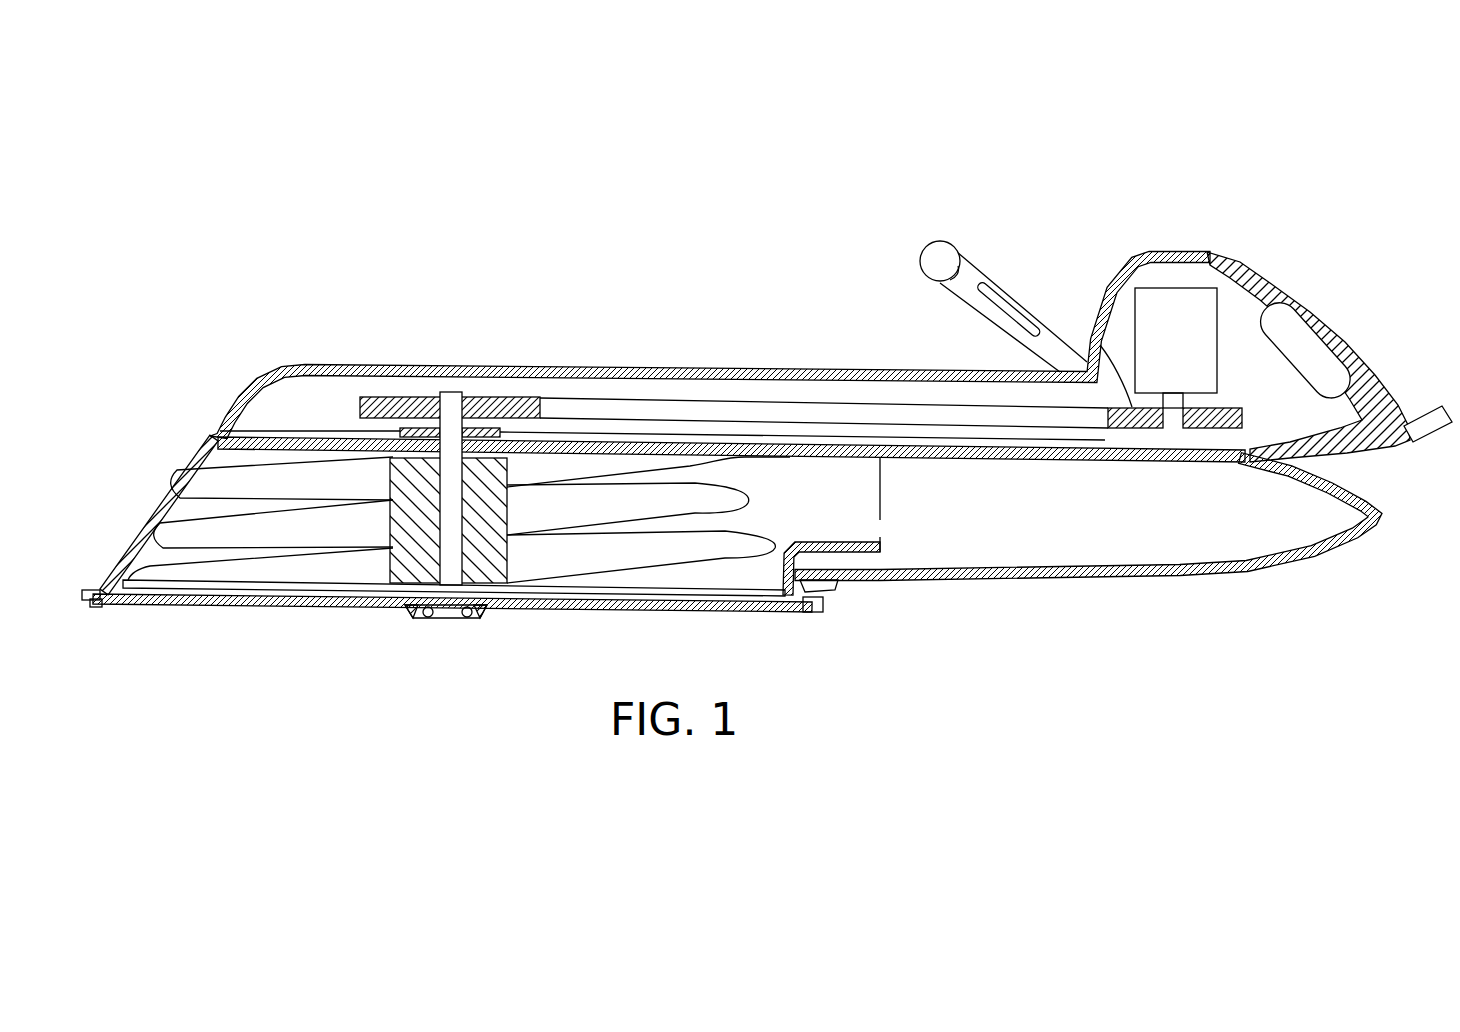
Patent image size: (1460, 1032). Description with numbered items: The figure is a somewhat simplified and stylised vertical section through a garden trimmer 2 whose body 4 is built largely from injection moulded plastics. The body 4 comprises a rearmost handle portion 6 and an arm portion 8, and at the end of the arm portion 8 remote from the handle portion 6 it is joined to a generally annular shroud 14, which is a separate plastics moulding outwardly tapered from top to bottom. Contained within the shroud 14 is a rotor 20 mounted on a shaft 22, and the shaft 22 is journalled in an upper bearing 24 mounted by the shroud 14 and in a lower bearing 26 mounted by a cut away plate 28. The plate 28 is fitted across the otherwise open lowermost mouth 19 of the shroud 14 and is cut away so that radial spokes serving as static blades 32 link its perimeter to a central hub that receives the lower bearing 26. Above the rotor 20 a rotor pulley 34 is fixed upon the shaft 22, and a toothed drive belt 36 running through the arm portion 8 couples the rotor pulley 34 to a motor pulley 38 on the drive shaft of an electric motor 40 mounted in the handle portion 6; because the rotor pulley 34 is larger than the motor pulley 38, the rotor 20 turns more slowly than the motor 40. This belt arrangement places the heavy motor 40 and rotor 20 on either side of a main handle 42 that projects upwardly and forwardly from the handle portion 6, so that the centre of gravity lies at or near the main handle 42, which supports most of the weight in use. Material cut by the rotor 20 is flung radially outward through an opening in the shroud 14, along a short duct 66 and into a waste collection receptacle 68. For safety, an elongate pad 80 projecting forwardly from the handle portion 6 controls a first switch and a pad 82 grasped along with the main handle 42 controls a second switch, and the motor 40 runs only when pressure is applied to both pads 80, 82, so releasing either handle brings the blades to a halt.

The trimmer 2 is at (929, 622).
The body 4 is at (339, 365).
The handle portion 6 is at (1378, 400).
The arm portion 8 is at (826, 366).
The shroud 14 is at (142, 508).
The lowermost mouth 19 is at (349, 609).
The rotor 20 is at (173, 545).
The shaft 22 is at (455, 392).
The upper bearing 24 is at (410, 428).
The lower bearing 26 is at (482, 620).
The cut away plate 28 is at (681, 609).
The static blades 32 is at (566, 612).
The rotor pulley 34 is at (512, 397).
The toothed drive belt 36 is at (648, 410).
The motor pulley 38 is at (1094, 345).
The electric motor 40 is at (1172, 300).
The main handle 42 is at (920, 262).
The duct 66 is at (862, 532).
The waste collection receptacle 68 is at (1090, 578).
The pad 80 is at (1300, 340).
The pad 82 is at (953, 283).